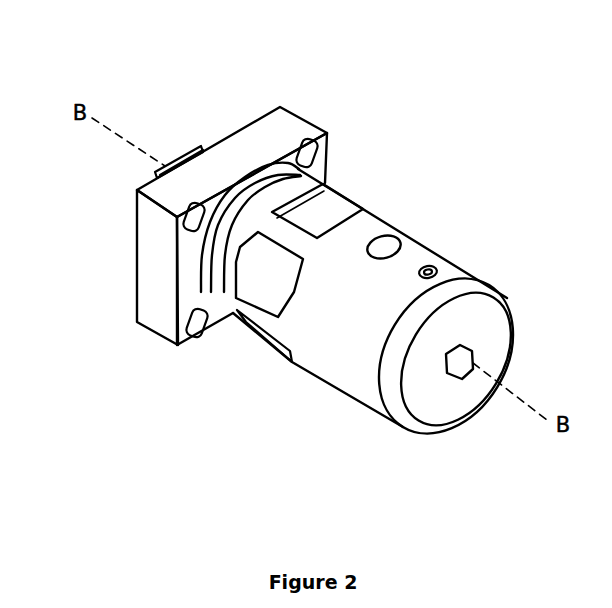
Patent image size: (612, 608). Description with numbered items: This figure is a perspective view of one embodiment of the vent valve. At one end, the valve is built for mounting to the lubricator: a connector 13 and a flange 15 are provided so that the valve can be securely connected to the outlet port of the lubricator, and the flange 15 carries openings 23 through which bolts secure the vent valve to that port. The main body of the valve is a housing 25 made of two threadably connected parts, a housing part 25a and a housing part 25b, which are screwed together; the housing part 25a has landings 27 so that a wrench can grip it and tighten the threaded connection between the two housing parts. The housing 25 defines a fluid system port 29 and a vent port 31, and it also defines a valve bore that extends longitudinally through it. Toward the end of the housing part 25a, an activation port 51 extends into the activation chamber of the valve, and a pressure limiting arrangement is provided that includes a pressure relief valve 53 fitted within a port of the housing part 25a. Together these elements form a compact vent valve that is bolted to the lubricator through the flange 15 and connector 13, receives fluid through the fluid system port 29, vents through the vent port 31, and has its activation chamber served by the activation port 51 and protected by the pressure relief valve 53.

The connector 13 is at (187, 148).
The flange 15 is at (273, 130).
The openings 23 is at (199, 333).
The housing 25 is at (381, 242).
The housing part 25a is at (497, 310).
The housing part 25b is at (196, 282).
The landings 27 is at (273, 273).
The fluid system port 29 is at (133, 172).
The vent port 31 is at (395, 238).
The activation port 51 is at (464, 376).
The pressure relief valve 53 is at (431, 265).